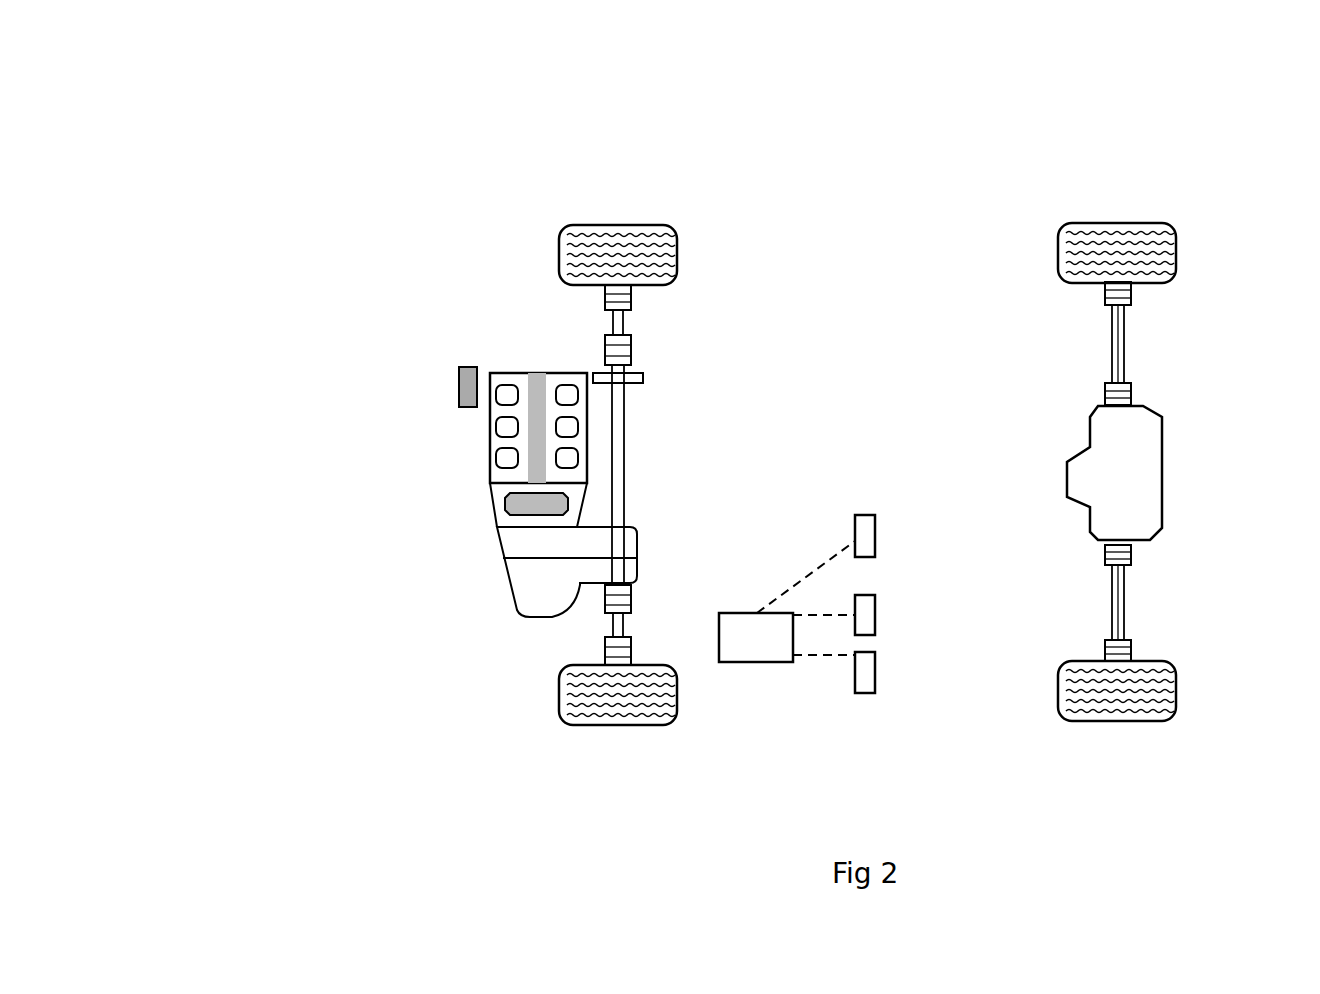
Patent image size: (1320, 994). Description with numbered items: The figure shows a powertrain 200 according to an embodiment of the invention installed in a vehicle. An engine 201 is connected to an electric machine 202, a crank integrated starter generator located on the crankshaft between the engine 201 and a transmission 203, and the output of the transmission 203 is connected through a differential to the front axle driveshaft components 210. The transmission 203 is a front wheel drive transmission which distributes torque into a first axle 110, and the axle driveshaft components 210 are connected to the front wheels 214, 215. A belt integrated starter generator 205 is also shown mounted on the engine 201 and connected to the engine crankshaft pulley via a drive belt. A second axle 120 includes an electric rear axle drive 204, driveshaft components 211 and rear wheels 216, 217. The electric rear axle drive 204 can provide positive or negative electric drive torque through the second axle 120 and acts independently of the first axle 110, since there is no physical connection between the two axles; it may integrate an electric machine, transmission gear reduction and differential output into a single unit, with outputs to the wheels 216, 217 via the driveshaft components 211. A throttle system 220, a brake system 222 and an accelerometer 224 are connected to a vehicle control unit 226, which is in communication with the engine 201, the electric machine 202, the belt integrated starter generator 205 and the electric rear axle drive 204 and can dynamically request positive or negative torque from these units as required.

The powertrain 200 is at (390, 208).
The first axle 110 is at (731, 374).
The second axle 120 is at (1000, 385).
The engine 201 is at (487, 418).
The electric machine (crank integrated starter generator, C-ISG) 202 is at (500, 516).
The transmission 203 is at (513, 597).
The electric rear axle drive (ERAD) 204 is at (1157, 413).
The belt integrated starter generator (B-ISG) 205 is at (455, 385).
The axle driveshaft components 210 is at (634, 597).
The driveshaft components 211 is at (1112, 590).
The front wheel 214 is at (638, 222).
The front wheel 215 is at (616, 727).
The rear wheel 216 is at (1130, 728).
The rear wheel 217 is at (1115, 220).
The throttle system 220 is at (880, 550).
The brake system 222 is at (880, 615).
The accelerometer 224 is at (880, 680).
The vehicle control unit (VCU) 226 is at (777, 668).